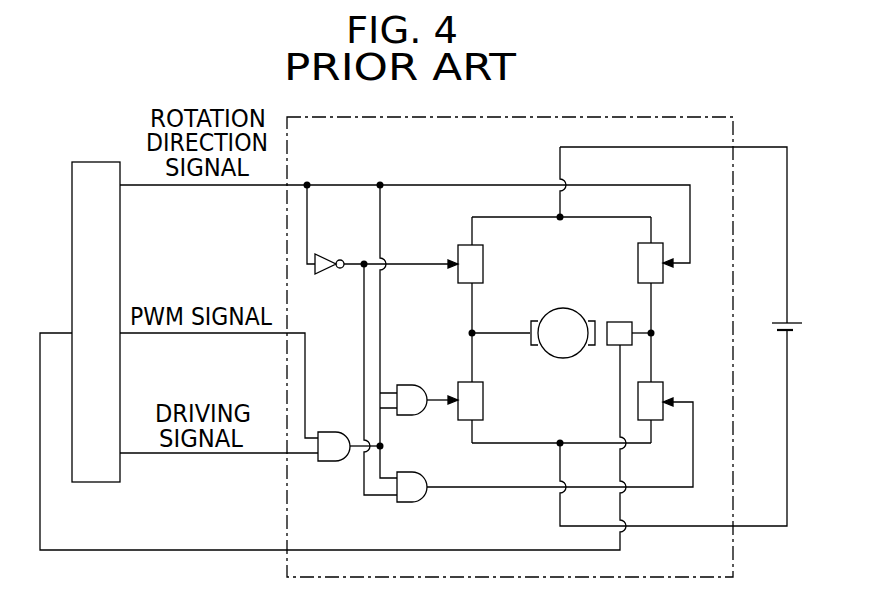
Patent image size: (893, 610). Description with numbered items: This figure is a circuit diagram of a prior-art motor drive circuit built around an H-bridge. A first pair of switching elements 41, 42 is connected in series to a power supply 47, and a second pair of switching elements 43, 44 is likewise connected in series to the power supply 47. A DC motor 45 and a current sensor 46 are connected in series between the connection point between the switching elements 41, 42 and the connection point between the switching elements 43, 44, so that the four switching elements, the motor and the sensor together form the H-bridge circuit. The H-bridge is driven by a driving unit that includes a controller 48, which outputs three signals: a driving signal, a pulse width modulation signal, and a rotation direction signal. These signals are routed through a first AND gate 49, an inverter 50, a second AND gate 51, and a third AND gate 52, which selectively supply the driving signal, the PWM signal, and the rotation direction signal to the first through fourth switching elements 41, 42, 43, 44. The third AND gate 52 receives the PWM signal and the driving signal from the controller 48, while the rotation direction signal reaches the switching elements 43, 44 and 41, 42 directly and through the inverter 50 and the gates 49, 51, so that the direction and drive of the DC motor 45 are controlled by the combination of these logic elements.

The switching element 41 is at (638, 254).
The switching element 42 is at (656, 381).
The switching element 43 is at (460, 246).
The switching element 44 is at (484, 393).
The DC motor 45 is at (553, 312).
The current sensor 46 is at (615, 347).
The power supply 47 is at (785, 333).
The controller 48 is at (103, 162).
The first AND gate 49 is at (406, 385).
The inverter 50 is at (325, 257).
The second AND gate 51 is at (403, 504).
The third AND gate 52 is at (325, 463).